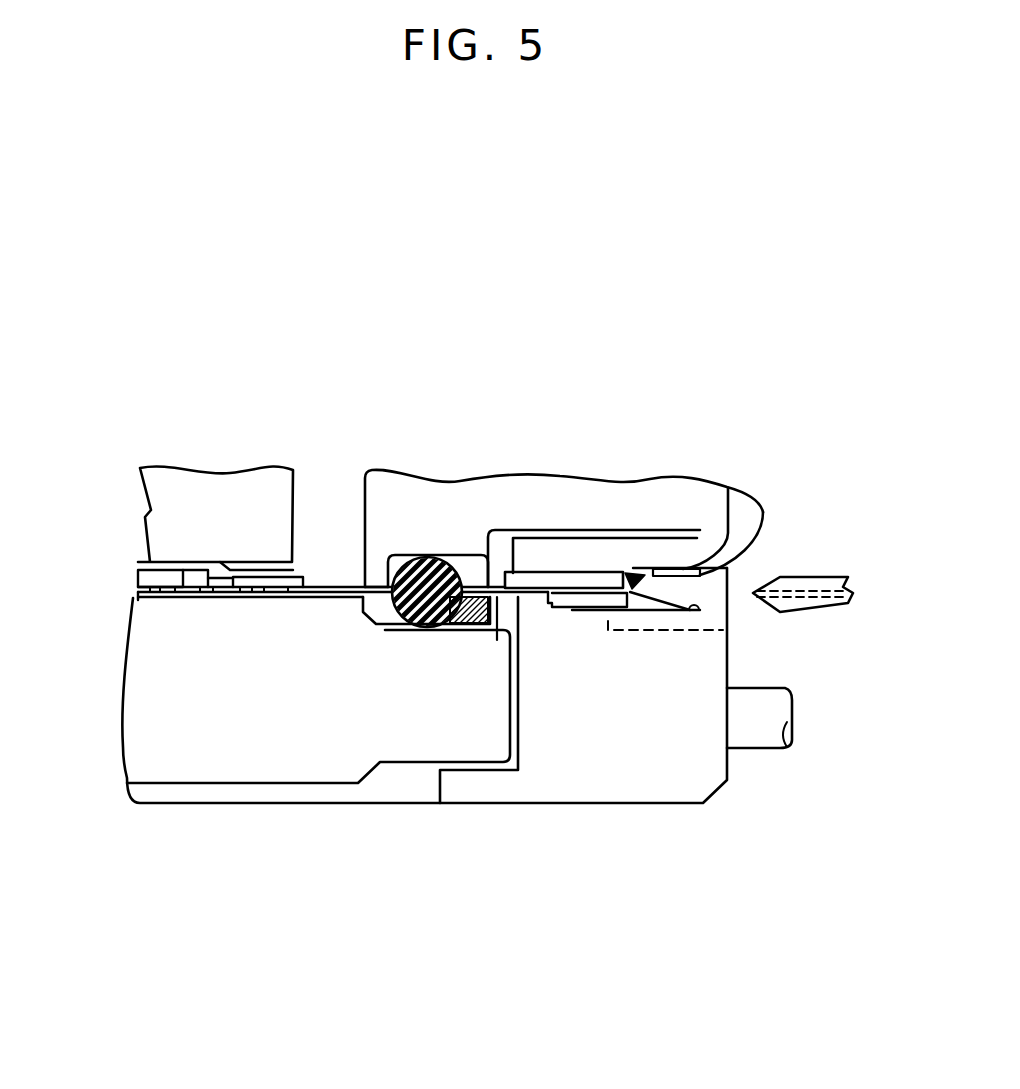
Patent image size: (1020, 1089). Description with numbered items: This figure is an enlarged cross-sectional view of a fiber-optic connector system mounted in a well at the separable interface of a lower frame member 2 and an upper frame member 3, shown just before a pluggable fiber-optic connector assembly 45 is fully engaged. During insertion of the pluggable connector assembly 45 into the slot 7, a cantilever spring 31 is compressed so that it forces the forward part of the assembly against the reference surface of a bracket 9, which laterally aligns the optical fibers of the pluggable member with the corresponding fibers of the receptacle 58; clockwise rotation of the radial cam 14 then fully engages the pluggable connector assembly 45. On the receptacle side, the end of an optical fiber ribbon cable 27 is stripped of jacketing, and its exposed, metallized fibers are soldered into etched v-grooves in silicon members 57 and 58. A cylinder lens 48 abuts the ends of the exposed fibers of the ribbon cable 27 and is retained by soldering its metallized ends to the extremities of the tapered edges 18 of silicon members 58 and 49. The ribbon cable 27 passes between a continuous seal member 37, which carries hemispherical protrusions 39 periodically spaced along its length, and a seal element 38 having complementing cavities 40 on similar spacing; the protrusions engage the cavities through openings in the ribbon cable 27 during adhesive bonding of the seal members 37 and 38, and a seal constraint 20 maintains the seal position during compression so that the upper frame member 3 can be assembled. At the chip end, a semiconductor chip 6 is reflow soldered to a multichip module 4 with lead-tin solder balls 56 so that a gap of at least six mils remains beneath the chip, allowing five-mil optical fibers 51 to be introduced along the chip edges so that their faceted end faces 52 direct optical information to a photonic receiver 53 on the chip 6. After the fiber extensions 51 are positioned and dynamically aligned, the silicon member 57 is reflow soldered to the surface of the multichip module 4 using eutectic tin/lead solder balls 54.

The frame member 2 is at (647, 806).
The upper frame member 3 is at (166, 468).
The multichip module 4 is at (166, 786).
The semiconductor chip 6 is at (152, 572).
The slot 7 is at (690, 612).
The bracket 9 is at (759, 520).
The radial cam 14 is at (773, 748).
The tapered edges 18 is at (640, 574).
The seal constraint 20 is at (470, 553).
The optical fiber ribbon cable 27 is at (338, 585).
The cantilever spring 31 is at (683, 613).
The continuous seal member 37 is at (432, 585).
The seal element 38 is at (441, 606).
The hemispherical protrusion 39 is at (670, 572).
The complementing cavity 40 is at (404, 628).
The pluggable fiber-optic connector assembly 45 is at (808, 577).
The cylinder lens 48 is at (626, 591).
The silicon member 49 is at (555, 610).
The optical fibers 51 is at (212, 594).
The faceted optical fiber end faces 52 is at (188, 594).
The photonic receiver 53 is at (184, 590).
The eutectic tin/lead solder balls 54 is at (276, 595).
The solder balls 56 is at (140, 597).
The silicon member 57 is at (281, 569).
The silicon member (receptacle) 58 is at (598, 574).